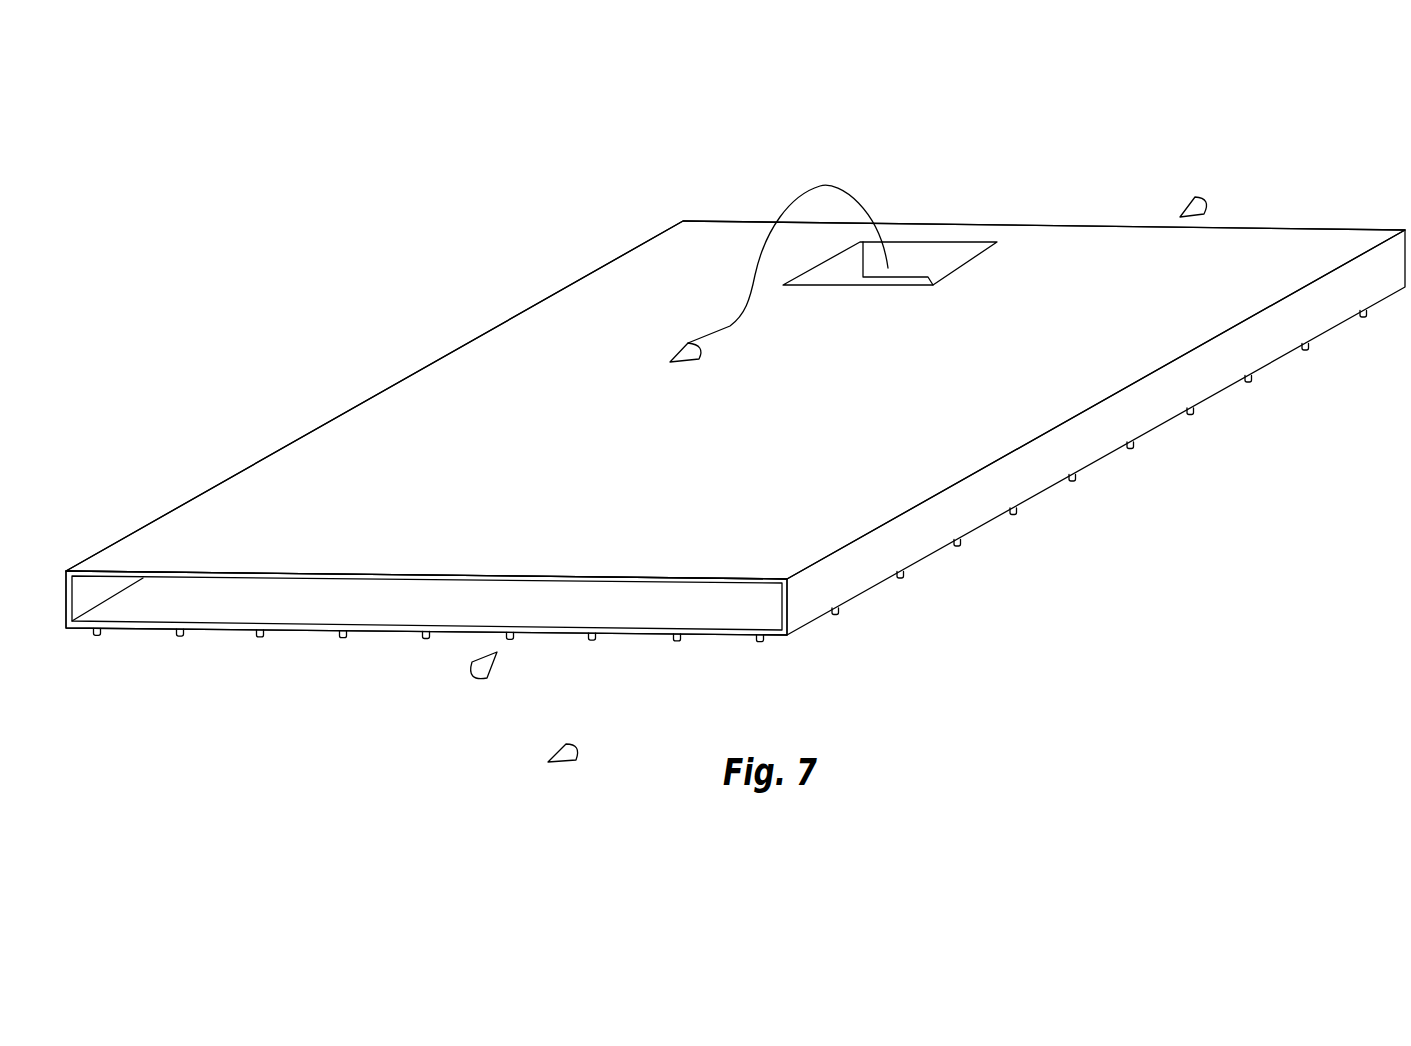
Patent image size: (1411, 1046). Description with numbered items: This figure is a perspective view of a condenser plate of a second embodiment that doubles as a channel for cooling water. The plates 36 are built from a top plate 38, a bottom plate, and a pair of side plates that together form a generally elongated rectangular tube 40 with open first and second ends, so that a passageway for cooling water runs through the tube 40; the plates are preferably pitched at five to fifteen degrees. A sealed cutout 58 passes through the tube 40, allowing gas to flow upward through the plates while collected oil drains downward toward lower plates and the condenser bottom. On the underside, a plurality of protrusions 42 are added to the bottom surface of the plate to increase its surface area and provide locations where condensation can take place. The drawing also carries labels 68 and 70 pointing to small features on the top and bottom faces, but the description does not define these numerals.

The plates 36 is at (200, 527).
The top plate 38 is at (312, 452).
The rectangular tube 40 is at (178, 597).
The protrusions 42 is at (426, 639).
The sealed cutout 58 is at (920, 257).
The flexible element 68 is at (730, 326).
The tab 70 is at (1207, 202).